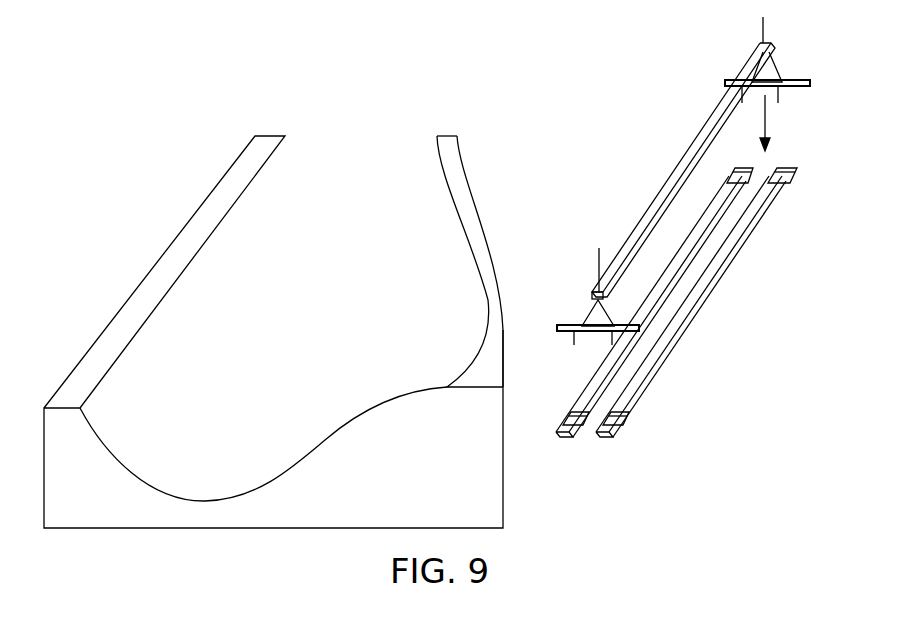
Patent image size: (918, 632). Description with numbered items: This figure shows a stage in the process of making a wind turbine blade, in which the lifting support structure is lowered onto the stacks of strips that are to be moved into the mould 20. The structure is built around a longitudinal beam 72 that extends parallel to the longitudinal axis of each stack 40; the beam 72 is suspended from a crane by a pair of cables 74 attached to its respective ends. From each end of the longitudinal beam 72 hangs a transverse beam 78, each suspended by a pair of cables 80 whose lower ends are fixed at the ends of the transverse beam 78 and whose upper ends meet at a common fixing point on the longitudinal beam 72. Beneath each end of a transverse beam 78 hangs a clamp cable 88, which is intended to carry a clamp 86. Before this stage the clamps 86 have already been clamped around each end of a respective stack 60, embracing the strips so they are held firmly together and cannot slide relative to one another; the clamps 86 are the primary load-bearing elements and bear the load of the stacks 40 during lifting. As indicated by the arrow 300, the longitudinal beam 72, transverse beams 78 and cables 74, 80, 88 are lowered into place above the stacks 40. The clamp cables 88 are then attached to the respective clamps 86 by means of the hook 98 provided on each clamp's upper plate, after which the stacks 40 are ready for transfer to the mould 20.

The mould 20 is at (148, 292).
The stack 40 is at (663, 297).
The stack 60 is at (590, 133).
The longitudinal beam 72 is at (713, 132).
The cables 74 is at (763, 32).
The transverse beam 78 is at (802, 79).
The cables 80 is at (771, 68).
The clamp 86 is at (740, 178).
The clamp cable 88 is at (781, 92).
The hook 98 is at (740, 175).
The arrow 300 is at (785, 123).